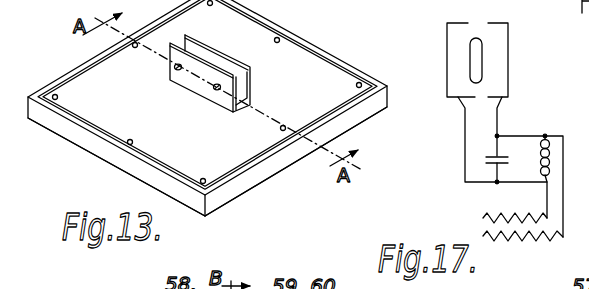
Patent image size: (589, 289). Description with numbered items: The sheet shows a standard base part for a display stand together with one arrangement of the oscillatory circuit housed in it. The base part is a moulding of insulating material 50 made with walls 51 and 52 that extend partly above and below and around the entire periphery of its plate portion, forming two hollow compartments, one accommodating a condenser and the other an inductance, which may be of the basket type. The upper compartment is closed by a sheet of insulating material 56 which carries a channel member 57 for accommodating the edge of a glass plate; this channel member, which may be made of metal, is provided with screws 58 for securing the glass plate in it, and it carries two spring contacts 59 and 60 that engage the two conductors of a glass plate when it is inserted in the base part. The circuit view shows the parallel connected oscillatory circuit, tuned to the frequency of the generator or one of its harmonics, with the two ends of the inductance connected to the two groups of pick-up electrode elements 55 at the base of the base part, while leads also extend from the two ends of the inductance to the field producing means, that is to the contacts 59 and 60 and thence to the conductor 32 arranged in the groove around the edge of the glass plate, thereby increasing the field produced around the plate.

In FIG. 13, the moulding of insulating material 50 is at (252, 181).
In FIG. 13, the wall 51 is at (337, 56).
In FIG. 13, the wall 52 is at (272, 180).
In FIG. 13, the sheet of insulating material 56 is at (163, 157).
In FIG. 13, the channel member 57 is at (257, 44).
In FIG. 13, the screws 58 is at (213, 88).
In FIG. 17, the conductor 32 is at (447, 42).
In FIG. 17, the spring contact 59 is at (455, 107).
In FIG. 17, the spring contact 60 is at (502, 103).
In FIG. 17, the electrode elements 55 is at (482, 217).